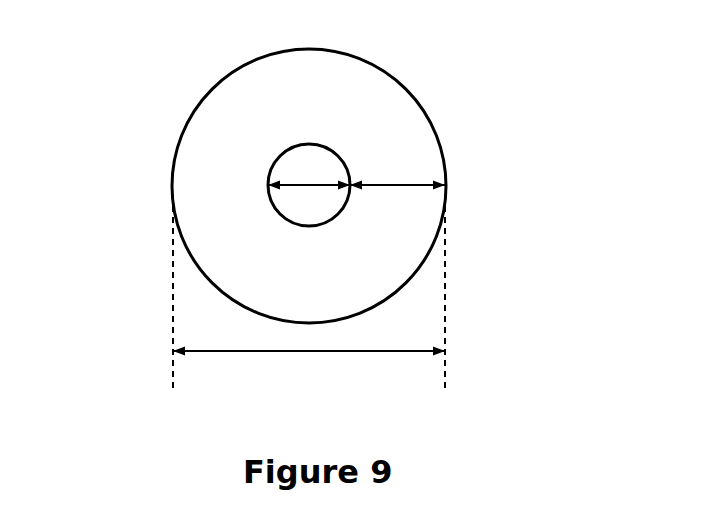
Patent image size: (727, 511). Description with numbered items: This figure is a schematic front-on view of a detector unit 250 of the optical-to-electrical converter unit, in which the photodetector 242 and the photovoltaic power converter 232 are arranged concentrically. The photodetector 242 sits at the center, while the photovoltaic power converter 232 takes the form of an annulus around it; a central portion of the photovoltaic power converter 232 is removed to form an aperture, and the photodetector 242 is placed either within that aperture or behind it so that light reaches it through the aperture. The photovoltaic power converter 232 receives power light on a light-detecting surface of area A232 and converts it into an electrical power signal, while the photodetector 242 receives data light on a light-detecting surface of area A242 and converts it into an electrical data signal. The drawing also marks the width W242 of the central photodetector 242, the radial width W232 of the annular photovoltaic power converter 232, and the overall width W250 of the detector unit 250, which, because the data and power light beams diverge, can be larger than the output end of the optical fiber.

The detector unit 250 is at (152, 70).
The photovoltaic power converter 232 is at (368, 85).
The photodetector 242 is at (323, 142).
The light-detecting surface area of photovoltaic power converter A232 is at (372, 85).
The light-detecting surface area of photodetector A242 is at (328, 168).
The width of photovoltaic power converter W232 is at (390, 187).
The width of photodetector W242 is at (309, 186).
The width of detector unit W250 is at (309, 299).